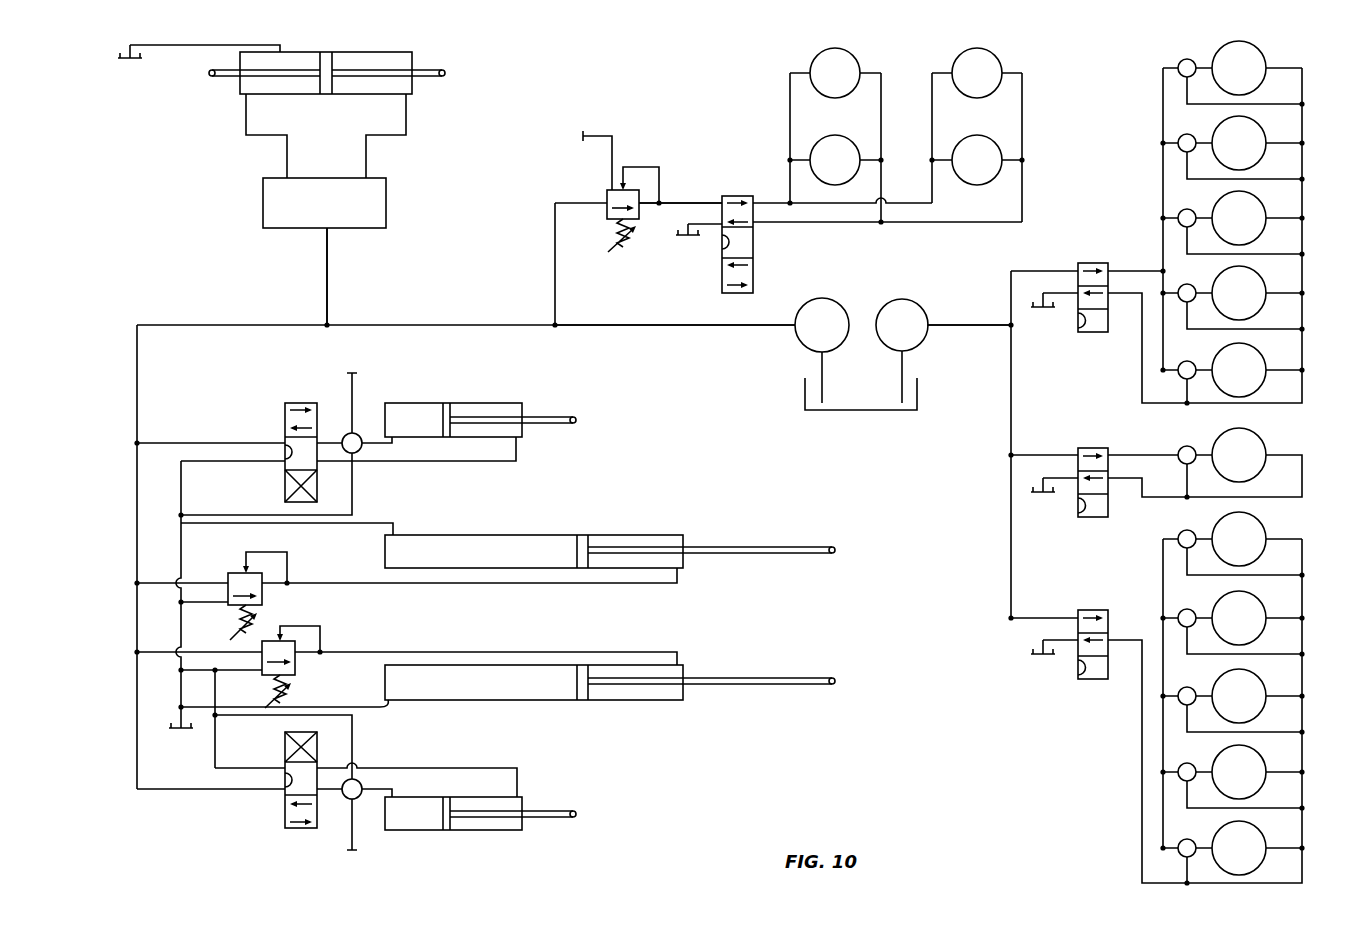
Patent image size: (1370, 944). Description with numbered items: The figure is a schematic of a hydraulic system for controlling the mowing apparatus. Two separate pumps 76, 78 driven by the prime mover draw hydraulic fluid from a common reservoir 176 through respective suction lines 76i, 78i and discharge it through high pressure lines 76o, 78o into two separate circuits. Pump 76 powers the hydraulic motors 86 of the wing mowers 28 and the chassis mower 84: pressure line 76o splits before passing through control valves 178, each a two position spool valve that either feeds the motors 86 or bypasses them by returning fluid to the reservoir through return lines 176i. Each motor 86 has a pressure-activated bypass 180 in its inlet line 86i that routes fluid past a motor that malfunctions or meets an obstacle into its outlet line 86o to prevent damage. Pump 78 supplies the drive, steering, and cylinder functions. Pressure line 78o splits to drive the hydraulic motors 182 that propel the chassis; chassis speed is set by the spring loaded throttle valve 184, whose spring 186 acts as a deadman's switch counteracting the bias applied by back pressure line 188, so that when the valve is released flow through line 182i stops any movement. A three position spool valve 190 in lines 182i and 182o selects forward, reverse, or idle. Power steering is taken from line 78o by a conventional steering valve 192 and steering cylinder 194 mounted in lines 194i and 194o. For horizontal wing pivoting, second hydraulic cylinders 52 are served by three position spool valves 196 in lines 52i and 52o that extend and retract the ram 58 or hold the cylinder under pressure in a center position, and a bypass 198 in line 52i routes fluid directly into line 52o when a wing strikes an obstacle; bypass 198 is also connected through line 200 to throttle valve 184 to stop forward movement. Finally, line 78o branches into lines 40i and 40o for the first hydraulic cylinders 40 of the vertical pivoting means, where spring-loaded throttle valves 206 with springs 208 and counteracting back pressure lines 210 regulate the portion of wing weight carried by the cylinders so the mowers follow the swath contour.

The steering line 194o is at (125, 50).
The steering cylinder 194 is at (413, 60).
The reservoir 176 is at (130, 63).
The steering valve 192 is at (388, 204).
The steering line 194i is at (328, 281).
The line 200 is at (592, 136).
The back pressure line 188 is at (640, 167).
The throttle valve 184 is at (607, 196).
The spring 186 is at (608, 252).
The motor line 182i is at (696, 203).
The three position spool valve 190 is at (753, 275).
The return line 176i is at (712, 232).
The hydraulic motor 182 is at (856, 58).
The motor line 182o is at (838, 224).
The pump 78 is at (838, 300).
The pump 76 is at (918, 300).
The high pressure line 76o is at (970, 325).
The high pressure line 78o is at (702, 330).
The suction line 78i is at (826, 380).
The suction line 76i is at (906, 375).
The control valve 178 is at (1093, 263).
The motor inlet line 86i is at (1170, 140).
The pressure-activated bypass 180 is at (1180, 60).
The hydraulic motor 86 is at (1262, 128).
The motor outlet line 86o is at (1304, 200).
The mower 28 is at (1308, 235).
The mower 84 is at (1305, 470).
The cylinder line 52i is at (212, 443).
The cylinder line 52o is at (222, 461).
The three position spool valve 196 is at (301, 403).
The bypass 198 is at (355, 455).
The second hydraulic cylinder 52 is at (423, 410).
The ram 58 is at (560, 418).
The cylinder line 40o is at (392, 523).
The first hydraulic cylinder 40 is at (505, 535).
The cylinder line 40i is at (336, 583).
The back pressure line 210 is at (272, 552).
The throttle valve 206 is at (262, 595).
The spring 208 is at (236, 630).